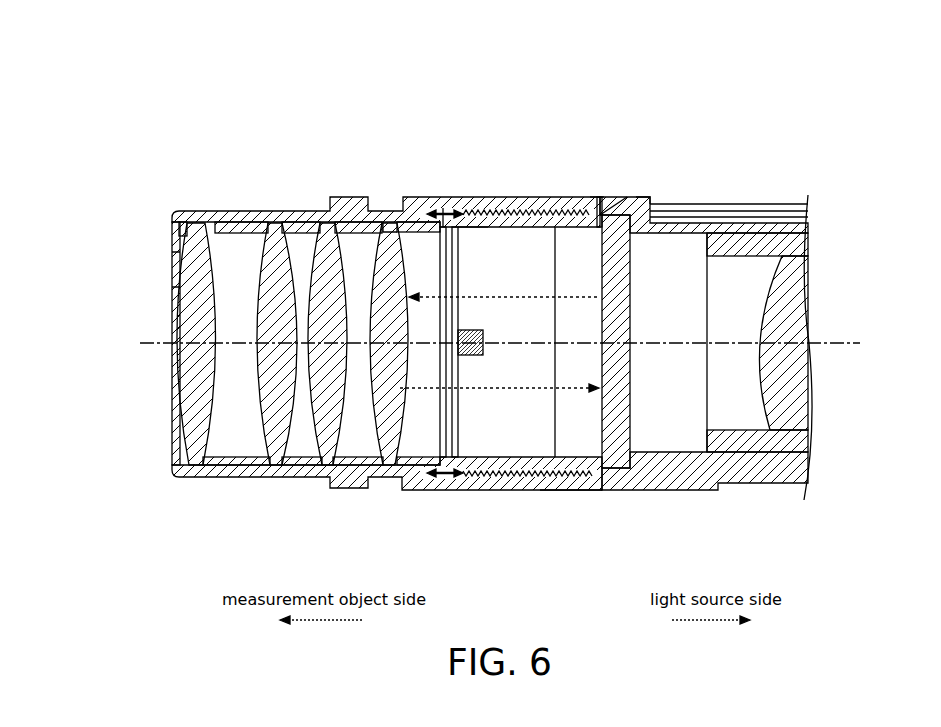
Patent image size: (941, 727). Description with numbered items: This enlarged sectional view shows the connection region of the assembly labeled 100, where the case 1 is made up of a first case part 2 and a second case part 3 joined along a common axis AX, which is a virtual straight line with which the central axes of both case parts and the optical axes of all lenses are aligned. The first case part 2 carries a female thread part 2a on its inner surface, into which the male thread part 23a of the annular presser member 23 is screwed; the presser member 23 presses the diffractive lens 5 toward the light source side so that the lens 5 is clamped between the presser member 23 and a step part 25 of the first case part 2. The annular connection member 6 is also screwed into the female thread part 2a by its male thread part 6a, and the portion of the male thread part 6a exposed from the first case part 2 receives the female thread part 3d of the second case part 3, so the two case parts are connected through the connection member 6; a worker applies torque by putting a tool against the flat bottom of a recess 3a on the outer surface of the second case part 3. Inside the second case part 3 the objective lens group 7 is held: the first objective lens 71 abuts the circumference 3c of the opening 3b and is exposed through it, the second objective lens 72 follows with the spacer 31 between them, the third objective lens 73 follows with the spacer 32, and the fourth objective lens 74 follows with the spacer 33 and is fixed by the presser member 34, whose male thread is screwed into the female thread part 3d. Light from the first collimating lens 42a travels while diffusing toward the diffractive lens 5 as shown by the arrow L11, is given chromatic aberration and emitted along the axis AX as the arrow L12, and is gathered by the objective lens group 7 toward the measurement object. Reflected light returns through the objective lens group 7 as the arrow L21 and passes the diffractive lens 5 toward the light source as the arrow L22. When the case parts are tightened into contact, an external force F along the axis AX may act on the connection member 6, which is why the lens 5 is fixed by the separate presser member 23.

The optical unit 100 is at (653, 111).
The case 1 is at (548, 127).
The first case part 2 is at (555, 197).
The female thread part 2a is at (563, 490).
The second case part 3 is at (469, 197).
The recess 3a is at (393, 212).
The opening 3b is at (170, 240).
The circumference of the opening 3c is at (180, 212).
The female thread part 3d is at (505, 482).
The diffractive lens 5 is at (600, 418).
The connection member 6 is at (480, 232).
The male thread part 6a is at (488, 218).
The objective lens group 7 is at (210, 128).
The first objective lens 71 is at (217, 224).
The second objective lens 72 is at (281, 224).
The third objective lens 73 is at (323, 224).
The fourth objective lens 74 is at (385, 224).
The presser member 23 is at (597, 220).
The male thread part 23a is at (595, 197).
The step part 25 is at (638, 197).
The spacer 31 is at (243, 470).
The spacer 32 is at (300, 470).
The spacer 33 is at (360, 470).
The presser member 34 is at (430, 478).
The first collimating lens 42a is at (783, 232).
The external force F is at (444, 208).
The arrow L11 is at (681, 310).
The arrow L12 is at (500, 297).
The arrow L21 is at (500, 390).
The arrow L22 is at (680, 377).
The axis AX is at (847, 345).